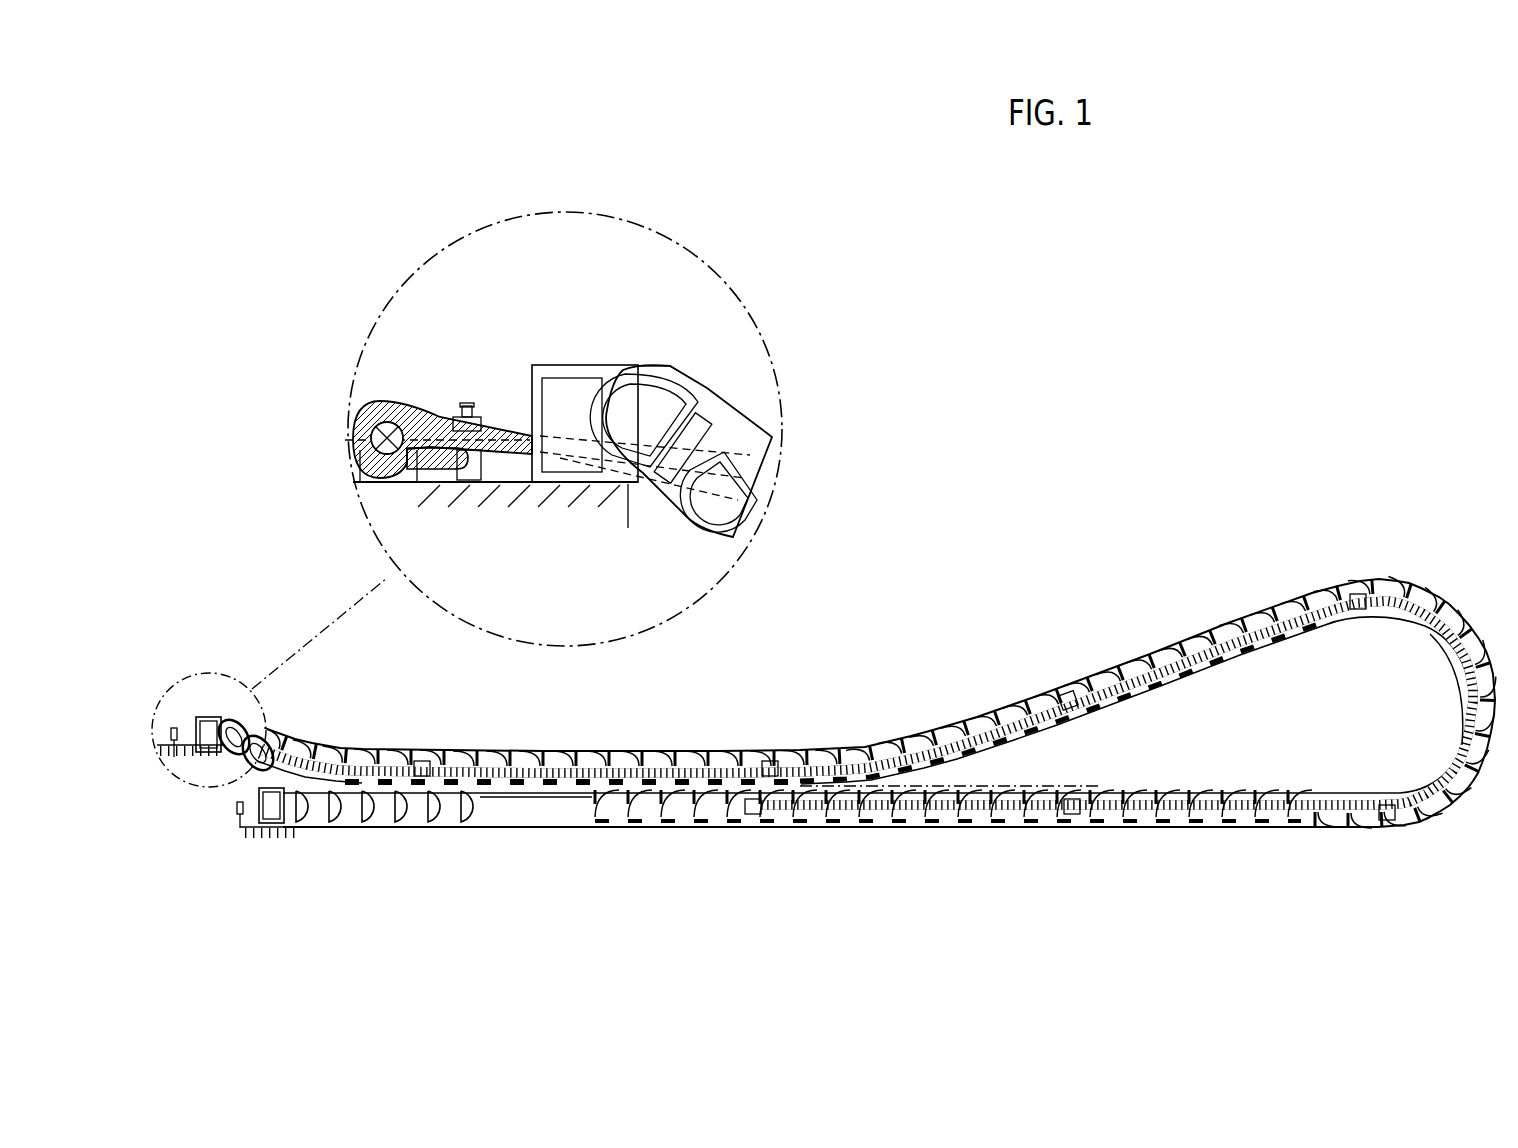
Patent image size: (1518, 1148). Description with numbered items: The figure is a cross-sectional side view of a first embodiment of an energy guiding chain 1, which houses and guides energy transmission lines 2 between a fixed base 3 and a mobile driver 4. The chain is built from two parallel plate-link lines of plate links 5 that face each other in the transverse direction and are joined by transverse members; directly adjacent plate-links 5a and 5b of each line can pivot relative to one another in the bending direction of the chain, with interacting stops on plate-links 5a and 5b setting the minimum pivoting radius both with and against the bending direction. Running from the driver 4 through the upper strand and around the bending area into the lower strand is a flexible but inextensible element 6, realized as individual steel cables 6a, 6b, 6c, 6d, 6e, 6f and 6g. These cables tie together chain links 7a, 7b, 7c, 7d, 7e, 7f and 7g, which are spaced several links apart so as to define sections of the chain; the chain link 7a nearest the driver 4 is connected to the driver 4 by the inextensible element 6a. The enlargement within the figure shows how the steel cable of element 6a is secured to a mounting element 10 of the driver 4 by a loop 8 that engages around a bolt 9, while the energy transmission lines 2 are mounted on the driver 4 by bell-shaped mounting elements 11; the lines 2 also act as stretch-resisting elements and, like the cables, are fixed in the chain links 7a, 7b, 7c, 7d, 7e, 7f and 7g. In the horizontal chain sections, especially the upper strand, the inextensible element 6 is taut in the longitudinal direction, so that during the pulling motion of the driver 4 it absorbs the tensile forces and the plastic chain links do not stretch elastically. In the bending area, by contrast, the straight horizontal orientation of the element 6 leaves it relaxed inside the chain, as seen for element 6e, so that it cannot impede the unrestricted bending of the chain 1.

The energy guiding chain 1 is at (1188, 632).
The energy transmission lines 2 is at (158, 752).
The fixed base 3 is at (270, 830).
The mobile driver 4 is at (213, 760).
The plate links 5 is at (645, 762).
The plate-link 5a is at (513, 758).
The plate-link 5b is at (548, 760).
The inextensible element 6 is at (162, 730).
The inextensible element 6a is at (325, 757).
The inextensible element 6b is at (617, 762).
The inextensible element 6c is at (985, 735).
The inextensible element 6d is at (1265, 618).
The inextensible element 6e is at (1440, 655).
The inextensible element 6f is at (1215, 802).
The inextensible element 6g is at (882, 803).
The chain link 7a is at (422, 762).
The chain link 7b is at (770, 760).
The chain link 7c is at (1068, 700).
The chain link 7d is at (1350, 586).
The chain link 7e is at (1388, 820).
The chain link 7f is at (1073, 813).
The chain link 7g is at (755, 815).
The loop 8 is at (370, 403).
The bolt 9 is at (352, 445).
The mounting element 10 is at (360, 478).
The bell-shaped mounting elements 11 is at (477, 408).